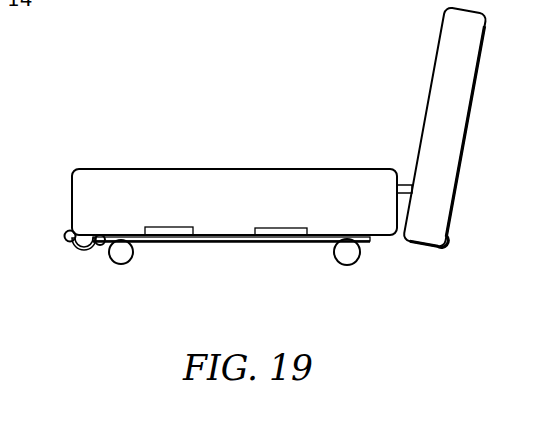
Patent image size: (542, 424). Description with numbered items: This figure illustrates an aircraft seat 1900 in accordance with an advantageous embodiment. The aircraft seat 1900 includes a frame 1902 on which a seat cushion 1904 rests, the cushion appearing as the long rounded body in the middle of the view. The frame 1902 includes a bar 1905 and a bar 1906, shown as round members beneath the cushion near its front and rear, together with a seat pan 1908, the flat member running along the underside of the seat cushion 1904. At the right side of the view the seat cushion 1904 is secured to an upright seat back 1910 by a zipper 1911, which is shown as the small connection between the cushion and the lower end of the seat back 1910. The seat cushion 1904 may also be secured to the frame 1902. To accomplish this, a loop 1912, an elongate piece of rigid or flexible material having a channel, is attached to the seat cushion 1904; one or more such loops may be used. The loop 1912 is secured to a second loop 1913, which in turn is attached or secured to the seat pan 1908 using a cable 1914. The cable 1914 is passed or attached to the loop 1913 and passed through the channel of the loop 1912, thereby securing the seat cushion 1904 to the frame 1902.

The aircraft seat 1900 is at (177, 168).
The frame 1902 is at (249, 243).
The seat cushion 1904 is at (263, 168).
The bar 1905 is at (133, 264).
The bar 1906 is at (359, 259).
The seat pan 1908 is at (187, 243).
The seat back 1910 is at (440, 38).
The zipper 1911 is at (406, 184).
The loop 1912 is at (68, 233).
The loop 1913 is at (100, 250).
The cable 1914 is at (70, 251).